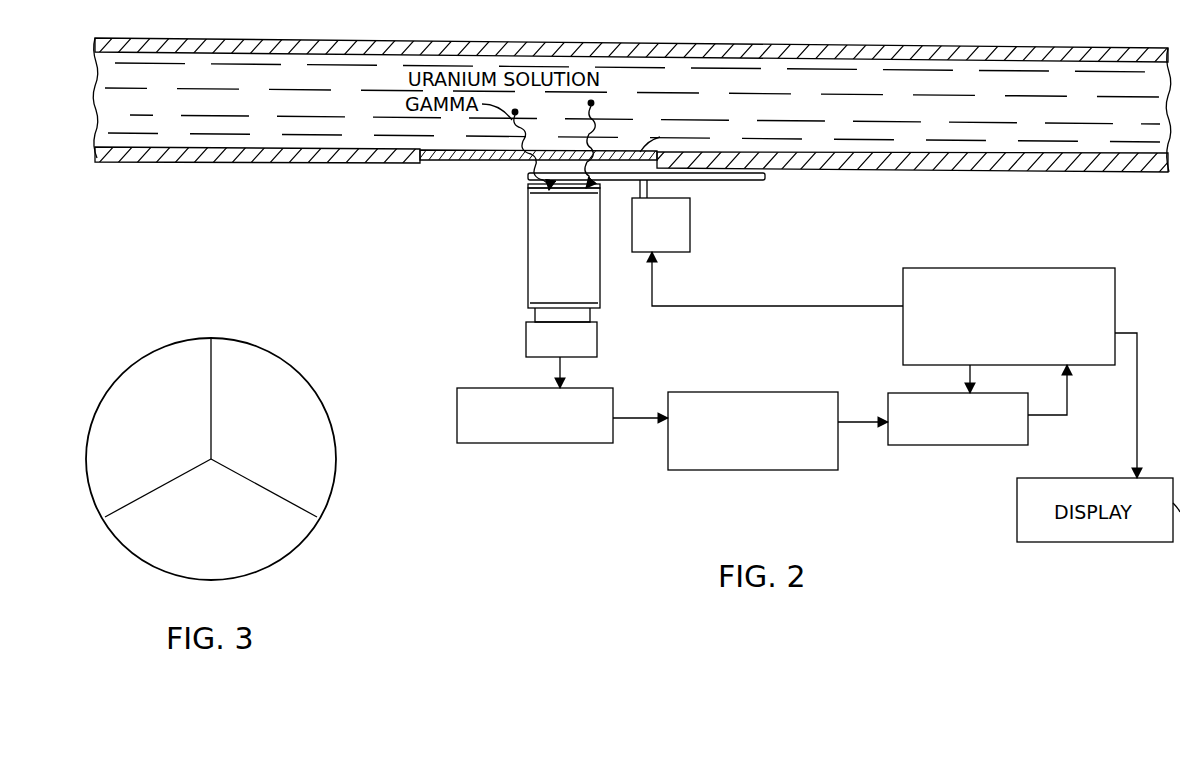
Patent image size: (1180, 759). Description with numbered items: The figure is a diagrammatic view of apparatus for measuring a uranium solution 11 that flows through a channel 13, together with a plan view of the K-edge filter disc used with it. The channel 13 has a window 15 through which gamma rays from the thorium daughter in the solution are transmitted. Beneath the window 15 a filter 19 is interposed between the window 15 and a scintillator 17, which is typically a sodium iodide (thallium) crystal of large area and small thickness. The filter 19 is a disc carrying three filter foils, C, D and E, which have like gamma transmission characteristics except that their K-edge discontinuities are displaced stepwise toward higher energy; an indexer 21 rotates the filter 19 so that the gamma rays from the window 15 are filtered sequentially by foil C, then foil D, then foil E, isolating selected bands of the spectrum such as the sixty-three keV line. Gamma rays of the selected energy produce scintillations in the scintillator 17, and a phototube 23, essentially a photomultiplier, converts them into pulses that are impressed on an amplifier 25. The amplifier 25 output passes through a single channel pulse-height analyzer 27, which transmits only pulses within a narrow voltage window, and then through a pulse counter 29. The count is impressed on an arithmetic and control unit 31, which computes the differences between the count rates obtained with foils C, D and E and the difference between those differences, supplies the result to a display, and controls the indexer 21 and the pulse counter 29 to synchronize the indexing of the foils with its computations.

In FIG. 2, the uranium solution 11 is at (290, 75).
In FIG. 2, the channel 13 is at (450, 42).
In FIG. 2, the window 15 is at (457, 150).
In FIG. 2, the scintillator 17 is at (528, 186).
In FIG. 2, the filter 19 is at (765, 177).
In FIG. 3, the filter 19 is at (335, 476).
In FIG. 2, the indexer 21 is at (690, 218).
In FIG. 2, the phototube 23 is at (600, 283).
In FIG. 2, the amplifier 25 is at (583, 443).
In FIG. 2, the pulse-height analyzer 27 is at (818, 470).
In FIG. 2, the pulse counter 29 is at (1028, 432).
In FIG. 2, the arithmetic and control unit 31 is at (1115, 293).